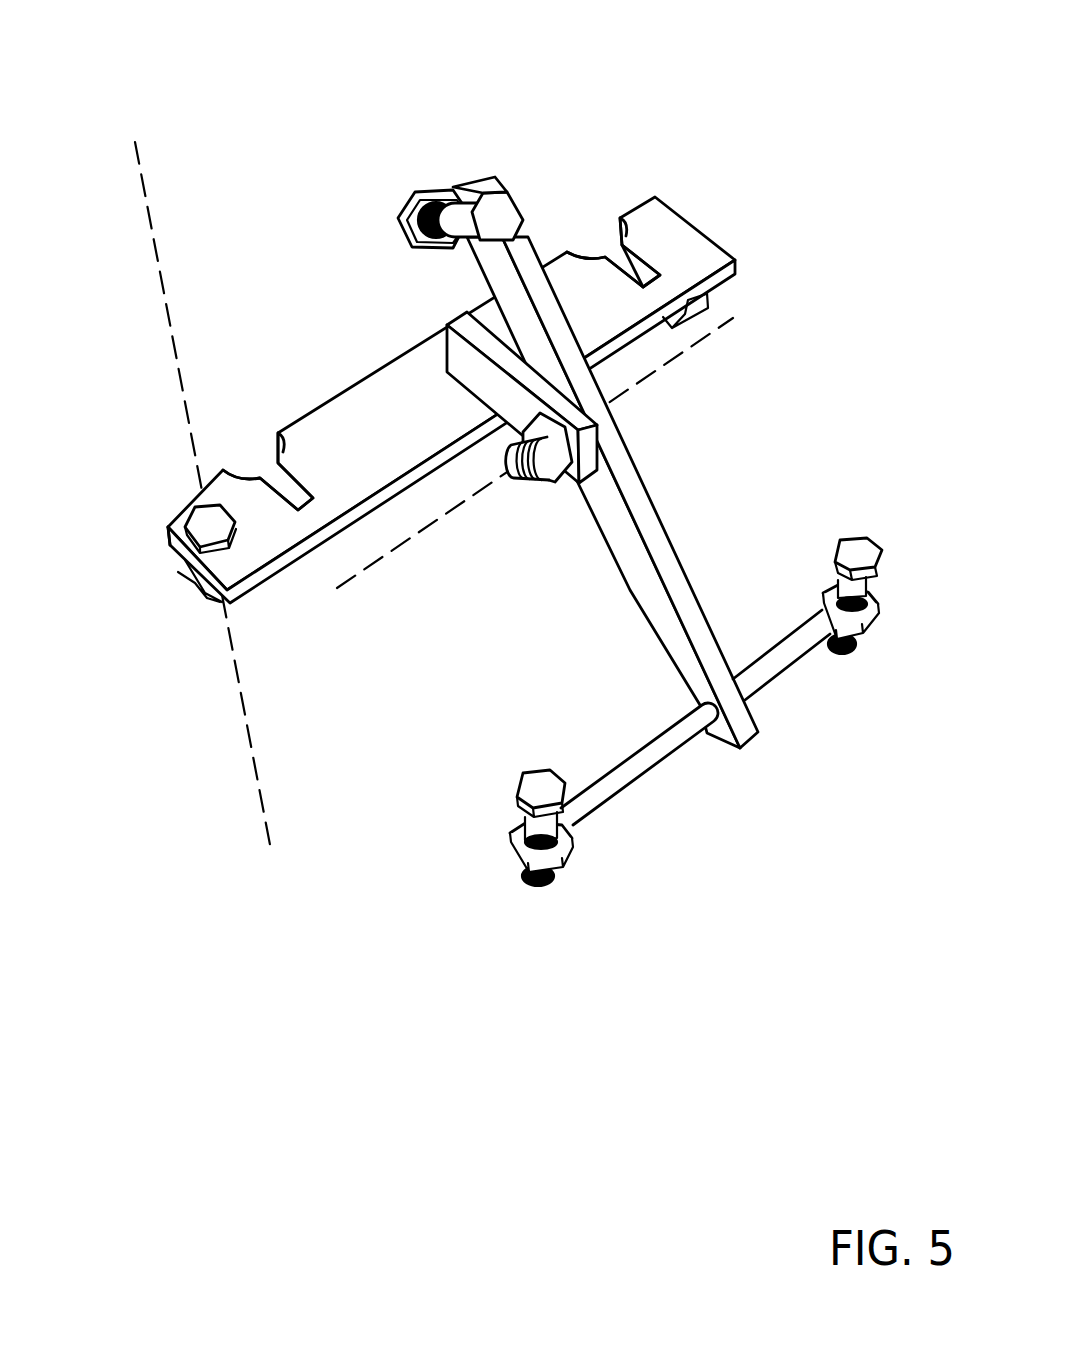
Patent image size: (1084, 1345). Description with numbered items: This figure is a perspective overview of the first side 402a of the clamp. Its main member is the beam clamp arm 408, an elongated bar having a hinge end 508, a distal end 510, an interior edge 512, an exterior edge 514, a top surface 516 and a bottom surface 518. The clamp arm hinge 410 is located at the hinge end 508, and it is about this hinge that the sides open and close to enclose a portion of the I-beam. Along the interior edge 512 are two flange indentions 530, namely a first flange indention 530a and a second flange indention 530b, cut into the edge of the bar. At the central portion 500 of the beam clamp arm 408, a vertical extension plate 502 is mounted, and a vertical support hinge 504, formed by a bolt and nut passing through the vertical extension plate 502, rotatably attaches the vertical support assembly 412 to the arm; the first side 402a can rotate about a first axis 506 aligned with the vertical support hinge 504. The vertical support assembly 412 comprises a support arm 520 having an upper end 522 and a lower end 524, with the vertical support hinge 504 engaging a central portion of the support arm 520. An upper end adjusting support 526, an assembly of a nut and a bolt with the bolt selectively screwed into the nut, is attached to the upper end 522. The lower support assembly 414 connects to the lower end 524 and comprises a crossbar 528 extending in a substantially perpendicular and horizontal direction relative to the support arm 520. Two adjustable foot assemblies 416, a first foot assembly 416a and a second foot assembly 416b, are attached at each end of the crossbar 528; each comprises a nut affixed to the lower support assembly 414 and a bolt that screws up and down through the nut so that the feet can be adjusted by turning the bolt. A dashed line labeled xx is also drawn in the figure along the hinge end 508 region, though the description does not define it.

The first side 402a is at (829, 62).
The beam clamp arm 408 is at (776, 225).
The clamp arm hinge 410 is at (197, 560).
The vertical support assembly 412 is at (678, 505).
The lower support assembly 414 is at (673, 793).
The two adjustable foot assemblies 416 is at (893, 538).
The first foot assembly 416a is at (853, 537).
The second foot assembly 416b is at (556, 868).
The central portion 500 is at (395, 352).
The vertical extension plate 502 is at (462, 312).
The vertical support hinge 504 is at (558, 484).
The first axis 506 is at (345, 588).
The hinge end 508 is at (203, 512).
The distal end 510 is at (684, 212).
The interior edge 512 is at (362, 382).
The exterior edge 514 is at (322, 545).
The top surface 516 is at (657, 215).
The bottom surface 518 is at (262, 616).
The support arm 520 is at (646, 480).
The upper end 522 is at (489, 175).
The lower end 524 is at (745, 750).
The upper end adjusting support 526 is at (430, 192).
The crossbar 528 is at (632, 762).
The two flange indentions 530 is at (394, 266).
The first flange indention 530a is at (246, 446).
The second flange indention 530b is at (597, 222).
The axis xx is at (240, 702).